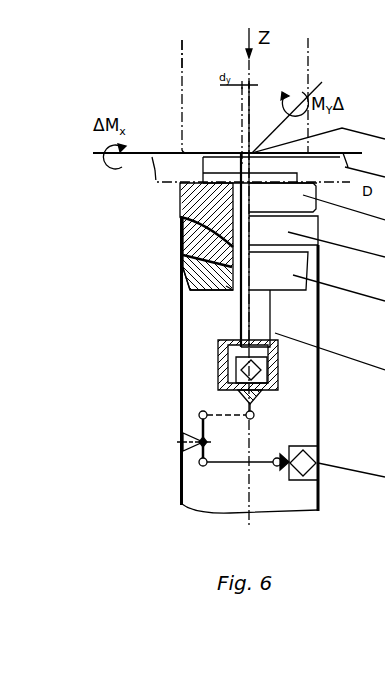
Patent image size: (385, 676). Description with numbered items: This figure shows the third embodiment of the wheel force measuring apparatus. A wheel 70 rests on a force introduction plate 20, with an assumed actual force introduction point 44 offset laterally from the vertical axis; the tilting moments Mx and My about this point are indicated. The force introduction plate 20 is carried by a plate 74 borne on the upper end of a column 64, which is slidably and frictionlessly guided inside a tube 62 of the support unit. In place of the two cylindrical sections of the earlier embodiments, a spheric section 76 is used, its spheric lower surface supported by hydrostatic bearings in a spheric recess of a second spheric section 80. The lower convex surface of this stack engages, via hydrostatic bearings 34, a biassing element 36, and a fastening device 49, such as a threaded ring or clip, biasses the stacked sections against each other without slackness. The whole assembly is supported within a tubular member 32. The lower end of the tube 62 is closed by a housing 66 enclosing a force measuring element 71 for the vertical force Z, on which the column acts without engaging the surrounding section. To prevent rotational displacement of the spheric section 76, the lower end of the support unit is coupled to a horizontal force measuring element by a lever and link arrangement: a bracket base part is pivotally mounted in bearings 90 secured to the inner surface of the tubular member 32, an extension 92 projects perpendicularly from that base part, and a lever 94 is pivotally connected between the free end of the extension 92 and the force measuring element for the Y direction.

The wheel 70 is at (195, 82).
The actual force introduction point 44 is at (250, 153).
The force introduction plate 20 is at (203, 156).
The plate 74 is at (200, 172).
The spheric section 76 is at (200, 213).
The second spheric section 80 is at (200, 230).
The hydrostatic bearings 34 is at (186, 269).
The biassing element 36 is at (186, 284).
The fastening device 49 is at (222, 293).
The column 64 is at (245, 312).
The tube 62 is at (260, 322).
The housing 66 is at (218, 360).
The force measuring element 71 is at (200, 392).
The tubular member 32 is at (182, 412).
The bearings 90 is at (182, 447).
The extension 92 is at (199, 463).
The lever 94 is at (221, 464).